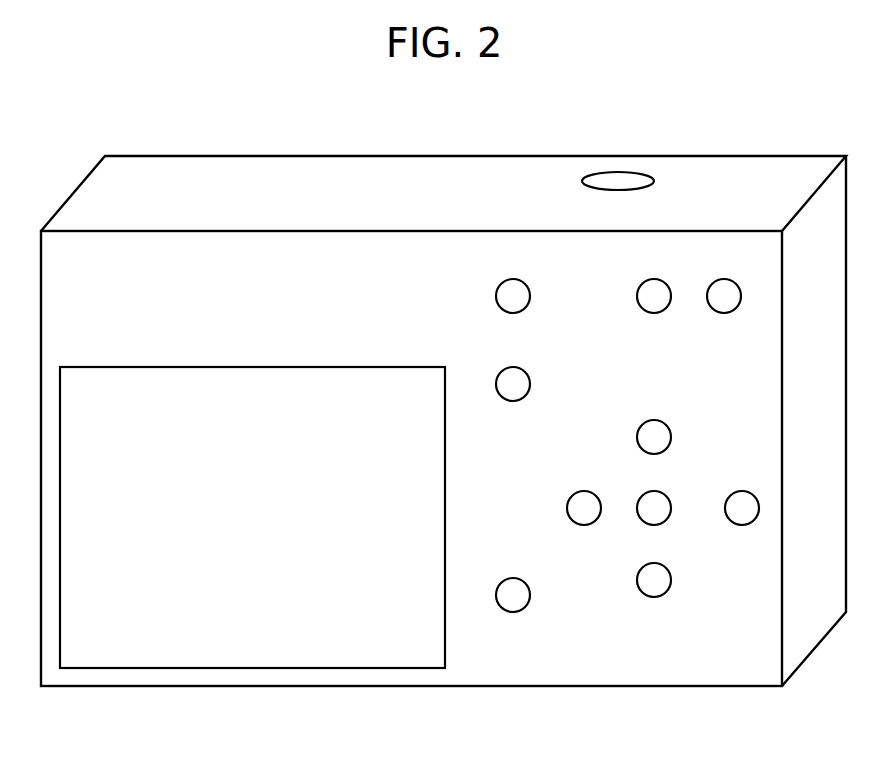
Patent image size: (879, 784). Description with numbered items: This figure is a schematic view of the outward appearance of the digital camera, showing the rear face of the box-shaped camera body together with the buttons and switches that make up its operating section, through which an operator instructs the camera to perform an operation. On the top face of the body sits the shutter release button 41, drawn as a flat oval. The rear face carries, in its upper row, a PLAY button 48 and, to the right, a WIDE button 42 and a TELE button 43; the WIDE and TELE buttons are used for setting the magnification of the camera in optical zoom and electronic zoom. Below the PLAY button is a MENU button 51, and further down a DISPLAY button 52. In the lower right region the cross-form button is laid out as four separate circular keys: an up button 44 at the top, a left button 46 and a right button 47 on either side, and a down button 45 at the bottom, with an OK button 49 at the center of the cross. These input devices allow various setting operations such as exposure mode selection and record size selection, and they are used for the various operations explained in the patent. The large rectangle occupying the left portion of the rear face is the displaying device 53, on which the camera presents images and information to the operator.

The shutter release button 41 is at (633, 178).
The WIDE button 42 is at (659, 280).
The TELE button 43 is at (729, 280).
The up button 44 is at (665, 424).
The down button 45 is at (670, 568).
The left button 46 is at (595, 494).
The right button 47 is at (752, 494).
The PLAY button 48 is at (518, 280).
The OK button 49 is at (670, 497).
The MENU button 51 is at (530, 381).
The DISPLAY button 52 is at (522, 580).
The displaying device 53 is at (226, 669).